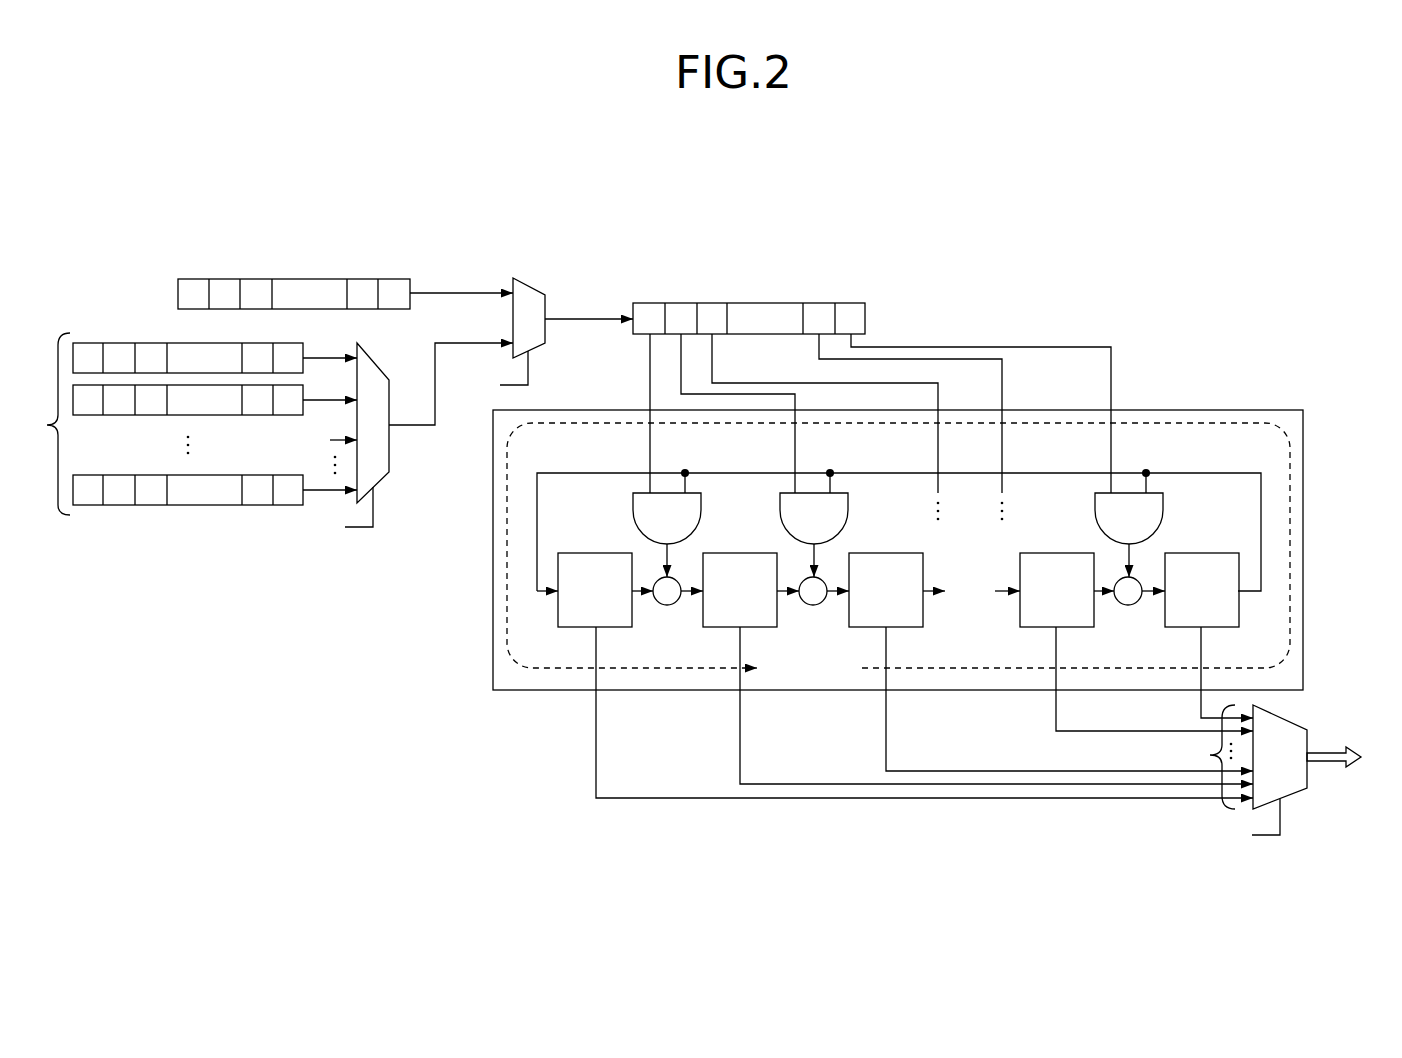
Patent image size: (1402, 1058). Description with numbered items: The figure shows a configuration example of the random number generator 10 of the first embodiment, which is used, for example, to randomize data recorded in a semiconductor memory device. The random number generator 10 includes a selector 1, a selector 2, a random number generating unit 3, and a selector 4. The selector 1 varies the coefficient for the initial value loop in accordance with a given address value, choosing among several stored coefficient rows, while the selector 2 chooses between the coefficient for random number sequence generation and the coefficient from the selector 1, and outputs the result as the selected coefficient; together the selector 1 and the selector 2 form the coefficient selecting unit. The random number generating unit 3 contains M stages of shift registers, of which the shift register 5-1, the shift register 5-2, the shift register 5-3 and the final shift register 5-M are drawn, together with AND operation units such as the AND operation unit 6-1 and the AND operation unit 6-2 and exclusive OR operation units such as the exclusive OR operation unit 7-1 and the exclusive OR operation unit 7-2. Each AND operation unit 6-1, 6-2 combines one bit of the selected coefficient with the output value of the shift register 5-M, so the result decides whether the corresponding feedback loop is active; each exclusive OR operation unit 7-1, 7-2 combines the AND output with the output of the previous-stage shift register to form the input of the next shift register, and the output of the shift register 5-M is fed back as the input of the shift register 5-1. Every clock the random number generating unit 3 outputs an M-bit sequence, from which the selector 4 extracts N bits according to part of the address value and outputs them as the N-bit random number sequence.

The selector 1 is at (375, 353).
The selector 2 is at (529, 278).
The random number generating unit 3 is at (1230, 410).
The selector 4 is at (1290, 712).
The shift register 5-1 is at (566, 553).
The shift register 5-2 is at (711, 553).
The shift register 5-3 is at (857, 553).
The shift register 5-M is at (1174, 553).
The AND operation unit 6-1 is at (633, 512).
The AND operation unit 6-2 is at (780, 512).
The exclusive OR operation unit 7-1 is at (667, 605).
The exclusive OR operation unit 7-2 is at (813, 605).
The random number generator 10 is at (1112, 198).